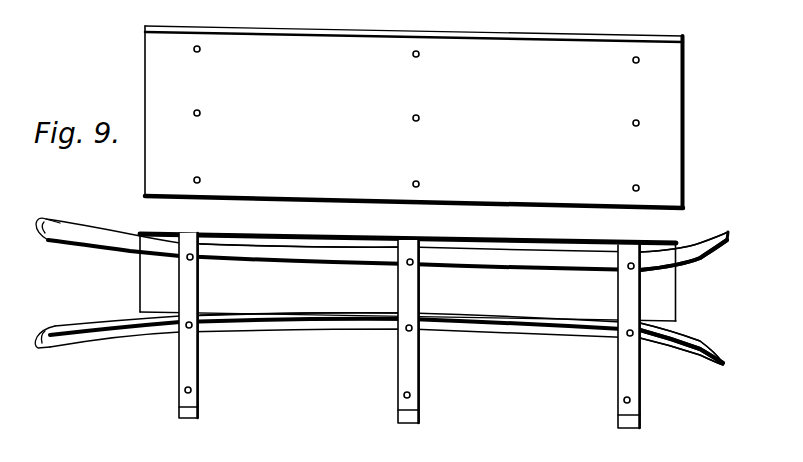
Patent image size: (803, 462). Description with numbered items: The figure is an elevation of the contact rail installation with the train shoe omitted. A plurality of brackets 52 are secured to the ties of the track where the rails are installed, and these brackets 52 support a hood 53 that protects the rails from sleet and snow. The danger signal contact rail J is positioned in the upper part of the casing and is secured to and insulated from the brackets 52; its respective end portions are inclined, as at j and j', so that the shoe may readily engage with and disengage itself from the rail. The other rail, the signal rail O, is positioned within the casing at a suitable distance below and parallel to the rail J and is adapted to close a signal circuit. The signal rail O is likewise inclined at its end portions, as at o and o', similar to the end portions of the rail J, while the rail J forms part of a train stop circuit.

The hood 53 is at (684, 145).
The brackets 52 is at (193, 367).
The inclined end portion of rail J j is at (382, 250).
The inclined end portion of rail J j' is at (684, 259).
The contact rail J is at (322, 255).
The inclined end portion of rail O o is at (379, 343).
The inclined end portion of rail O o' is at (689, 344).
The signal rail O is at (370, 328).